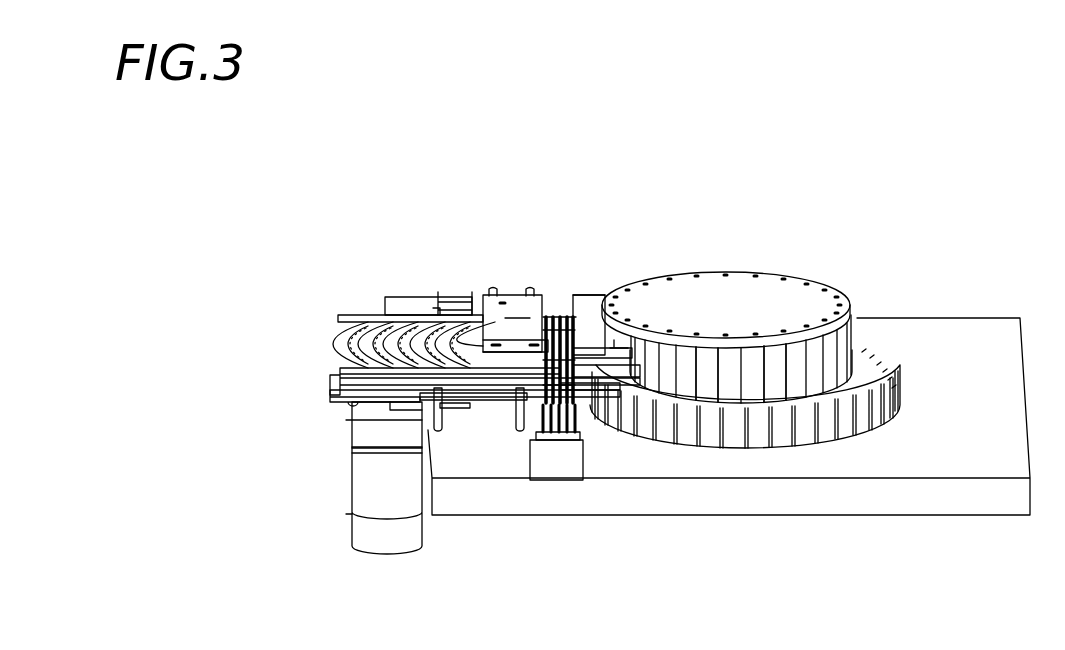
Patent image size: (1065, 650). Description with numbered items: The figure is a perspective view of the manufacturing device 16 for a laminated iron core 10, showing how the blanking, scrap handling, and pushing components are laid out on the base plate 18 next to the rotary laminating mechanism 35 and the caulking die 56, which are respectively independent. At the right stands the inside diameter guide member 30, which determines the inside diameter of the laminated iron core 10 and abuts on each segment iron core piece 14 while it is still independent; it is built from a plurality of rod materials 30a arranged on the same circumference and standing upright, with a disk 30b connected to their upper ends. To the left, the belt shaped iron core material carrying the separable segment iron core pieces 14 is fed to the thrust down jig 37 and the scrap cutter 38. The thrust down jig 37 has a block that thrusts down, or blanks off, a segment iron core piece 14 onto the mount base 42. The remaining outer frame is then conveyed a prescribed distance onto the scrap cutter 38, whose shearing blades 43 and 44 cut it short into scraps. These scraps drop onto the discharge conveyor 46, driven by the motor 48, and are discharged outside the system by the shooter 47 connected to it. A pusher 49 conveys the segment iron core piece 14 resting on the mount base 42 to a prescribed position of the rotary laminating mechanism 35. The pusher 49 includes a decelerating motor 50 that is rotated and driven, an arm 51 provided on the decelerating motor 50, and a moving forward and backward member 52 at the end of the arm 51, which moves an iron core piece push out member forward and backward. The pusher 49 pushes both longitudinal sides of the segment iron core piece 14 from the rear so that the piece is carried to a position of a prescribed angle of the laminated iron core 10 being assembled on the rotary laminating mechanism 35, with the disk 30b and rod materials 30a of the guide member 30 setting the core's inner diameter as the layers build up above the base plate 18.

The laminated iron core 10 is at (875, 382).
The segment iron core piece 14 is at (388, 323).
The manufacturing device 16 is at (807, 257).
The base plate 18 is at (951, 495).
The inside diameter guide member 30 is at (856, 323).
The rod materials 30a is at (750, 357).
The disk 30b is at (705, 270).
The rotary laminating mechanism 35 is at (627, 281).
The thrust down jig 37 is at (503, 277).
The scrap cutter 38 is at (548, 278).
The mount base 42 is at (496, 416).
The shearing blade 43 is at (528, 335).
The shearing blade 44 is at (563, 315).
The discharge conveyor 46 is at (565, 453).
The shooter 47 is at (545, 468).
The motor 48 is at (408, 305).
The pusher 49 is at (338, 424).
The decelerating motor 50 is at (412, 535).
The arm 51 is at (330, 396).
The moving forward and backward member 52 is at (335, 377).
The caulking die 56 is at (593, 280).